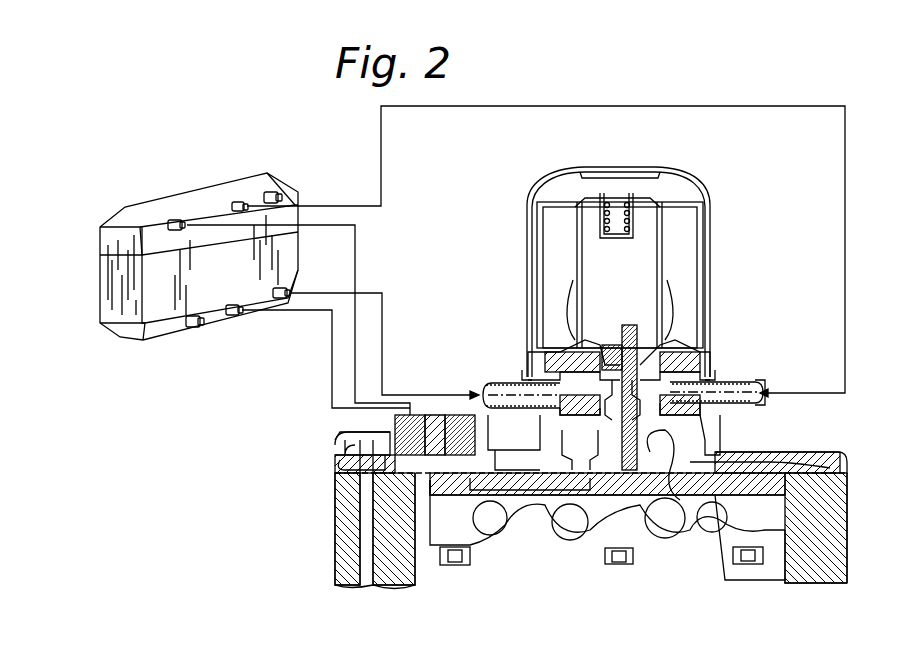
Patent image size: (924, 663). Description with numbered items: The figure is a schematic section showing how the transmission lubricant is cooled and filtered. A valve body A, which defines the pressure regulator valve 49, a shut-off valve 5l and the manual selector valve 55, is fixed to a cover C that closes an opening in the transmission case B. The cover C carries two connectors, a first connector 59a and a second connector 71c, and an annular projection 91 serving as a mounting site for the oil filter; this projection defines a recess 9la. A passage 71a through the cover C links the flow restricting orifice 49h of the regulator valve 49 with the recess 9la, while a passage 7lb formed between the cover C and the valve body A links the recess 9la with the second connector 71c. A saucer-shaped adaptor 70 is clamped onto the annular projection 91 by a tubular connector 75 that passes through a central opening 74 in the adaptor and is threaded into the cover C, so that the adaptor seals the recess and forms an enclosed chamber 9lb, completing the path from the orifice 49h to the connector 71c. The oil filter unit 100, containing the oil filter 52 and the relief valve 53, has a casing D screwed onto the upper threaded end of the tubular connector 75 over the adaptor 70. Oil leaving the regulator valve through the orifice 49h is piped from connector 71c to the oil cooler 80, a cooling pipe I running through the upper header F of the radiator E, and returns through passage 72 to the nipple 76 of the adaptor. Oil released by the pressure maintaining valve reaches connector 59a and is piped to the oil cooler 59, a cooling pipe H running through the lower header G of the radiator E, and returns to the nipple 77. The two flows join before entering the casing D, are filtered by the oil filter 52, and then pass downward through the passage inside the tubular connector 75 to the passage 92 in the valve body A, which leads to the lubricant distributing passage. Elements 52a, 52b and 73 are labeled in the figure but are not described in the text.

The oil cooler 80 is at (219, 206).
The oil cooler 59 is at (262, 318).
The first connector 59a is at (380, 438).
The oil filter unit 100 is at (522, 215).
The oil filter 52 is at (668, 230).
The relief valve 53 is at (620, 205).
The inner tube 52a is at (578, 350).
The inner tube 52b is at (650, 345).
The nipple 77 is at (508, 385).
The passage 72 is at (730, 385).
The nipple 76 is at (765, 380).
The adaptor 70 is at (680, 430).
The tubular connector 75 is at (628, 470).
The fitting sleeve 73 is at (514, 432).
The central opening 74 is at (556, 436).
The enclosed chamber 9lb is at (500, 475).
The annular projection 91 is at (715, 425).
The recess 9la is at (705, 445).
The passage 71a is at (800, 470).
The second connector 71c is at (455, 415).
The passage 7lb is at (505, 540).
The manual selector valve 55 is at (545, 540).
The passage 92 is at (623, 535).
The shut-off valve 5l is at (665, 530).
The pressure regulator valve 49 is at (708, 530).
The flow restricting orifice 49h is at (775, 500).
The valve body A is at (589, 565).
The transmission case B is at (330, 548).
The cover C is at (843, 452).
The casing D is at (512, 324).
The radiator E is at (172, 186).
The upper tank or header F is at (120, 218).
The lower tank or header G is at (172, 338).
The cooling pipe H is at (226, 318).
The cooling pipe I is at (180, 215).